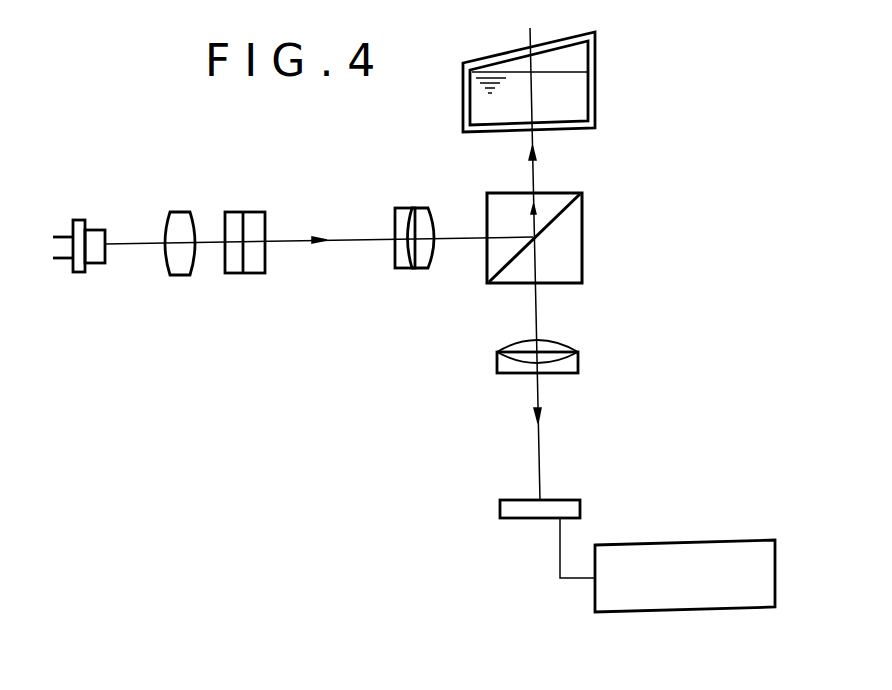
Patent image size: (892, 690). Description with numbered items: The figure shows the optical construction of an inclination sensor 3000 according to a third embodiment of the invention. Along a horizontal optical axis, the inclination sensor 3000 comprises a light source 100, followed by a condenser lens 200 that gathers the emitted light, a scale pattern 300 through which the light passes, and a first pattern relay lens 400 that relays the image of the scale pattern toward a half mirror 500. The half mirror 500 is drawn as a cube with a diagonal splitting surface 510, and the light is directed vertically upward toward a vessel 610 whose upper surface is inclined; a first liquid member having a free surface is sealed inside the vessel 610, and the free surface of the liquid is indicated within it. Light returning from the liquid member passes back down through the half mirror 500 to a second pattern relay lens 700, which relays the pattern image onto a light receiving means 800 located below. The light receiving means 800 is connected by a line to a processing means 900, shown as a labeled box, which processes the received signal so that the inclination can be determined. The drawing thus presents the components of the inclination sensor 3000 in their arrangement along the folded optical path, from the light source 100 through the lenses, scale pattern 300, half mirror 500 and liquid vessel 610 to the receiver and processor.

The light source 100 is at (90, 230).
The condenser lens 200 is at (183, 212).
The scale pattern 300 is at (255, 263).
The first pattern relay lens 400 is at (405, 207).
The half mirror 500 is at (608, 255).
The beam splitting surface 510 is at (558, 212).
The vessel 610 is at (573, 33).
The second pattern relay lens 700 is at (573, 350).
The light receiving means 800 is at (568, 500).
The processing means 900 is at (728, 542).
The inclination sensor 3000 is at (326, 395).